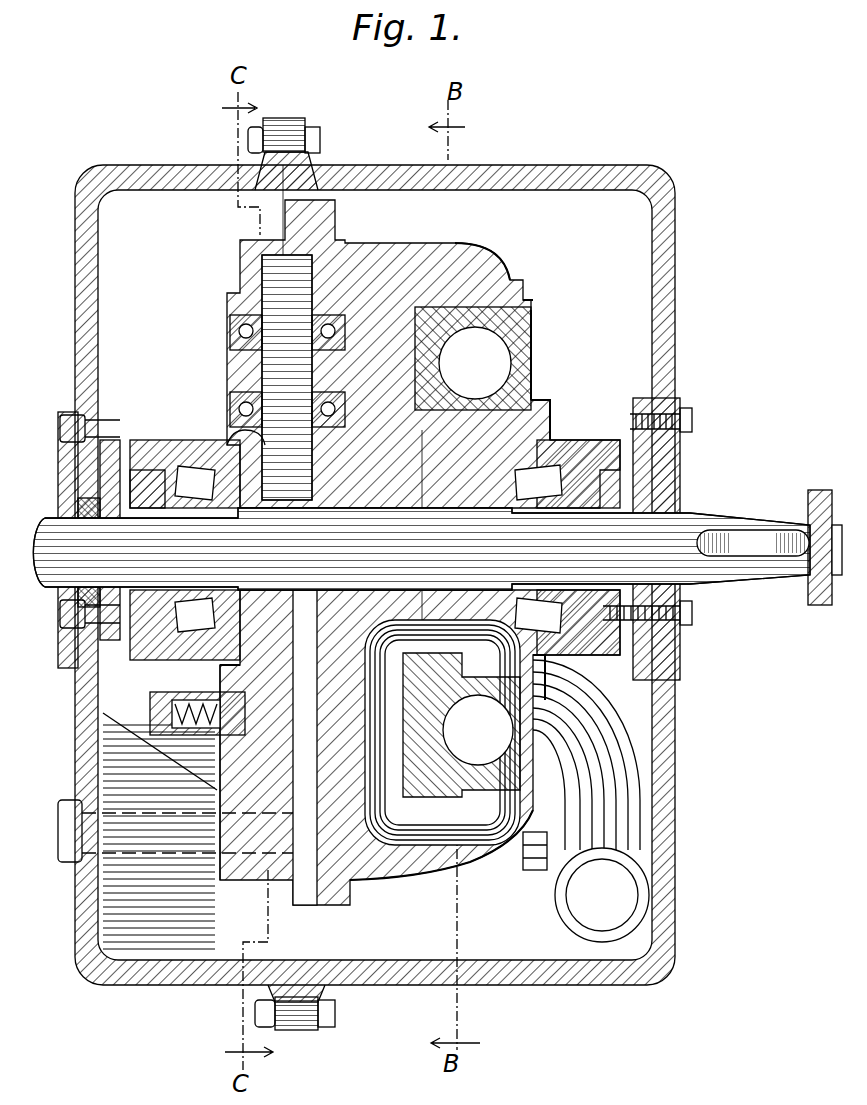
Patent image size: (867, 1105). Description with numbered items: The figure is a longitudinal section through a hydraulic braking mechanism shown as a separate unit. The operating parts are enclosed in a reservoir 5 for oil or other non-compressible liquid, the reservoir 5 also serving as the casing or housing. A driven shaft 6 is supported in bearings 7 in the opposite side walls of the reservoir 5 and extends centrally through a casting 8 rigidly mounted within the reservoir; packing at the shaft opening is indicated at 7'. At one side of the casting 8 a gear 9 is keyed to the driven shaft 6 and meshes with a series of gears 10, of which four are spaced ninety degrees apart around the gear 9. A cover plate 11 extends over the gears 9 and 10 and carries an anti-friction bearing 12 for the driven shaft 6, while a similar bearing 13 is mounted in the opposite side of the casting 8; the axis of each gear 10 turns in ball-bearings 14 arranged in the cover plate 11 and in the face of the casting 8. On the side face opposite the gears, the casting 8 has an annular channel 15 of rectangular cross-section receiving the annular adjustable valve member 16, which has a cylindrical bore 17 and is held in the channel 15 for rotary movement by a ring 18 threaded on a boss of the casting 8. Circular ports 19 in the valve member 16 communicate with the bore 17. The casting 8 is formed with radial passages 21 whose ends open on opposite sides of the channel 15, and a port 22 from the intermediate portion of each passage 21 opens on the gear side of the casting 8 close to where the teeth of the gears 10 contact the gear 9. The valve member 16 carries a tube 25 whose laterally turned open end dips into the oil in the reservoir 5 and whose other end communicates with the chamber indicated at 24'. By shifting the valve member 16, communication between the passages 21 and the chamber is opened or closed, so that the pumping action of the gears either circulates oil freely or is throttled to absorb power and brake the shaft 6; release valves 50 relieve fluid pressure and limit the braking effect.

The reservoir 5 is at (650, 740).
The driven shaft 6 is at (678, 530).
The bearings 7 is at (664, 539).
The packing cover 7' is at (75, 540).
The casting 8 is at (460, 248).
The gear 9 is at (268, 432).
The gears 10 is at (268, 272).
The cover plate 11 is at (292, 735).
The anti-friction bearing 12 is at (218, 465).
The bearing 13 is at (530, 478).
The ball-bearings 14 is at (330, 320).
The annular channel 15 is at (515, 282).
The annular adjustable valve member 16 is at (535, 305).
The cylindrical bore 17 is at (505, 348).
The ring 18 is at (540, 408).
The ports 19 is at (532, 312).
The radial passages 21 is at (445, 845).
The port 22 is at (335, 732).
The port 24' is at (442, 732).
The tube 25 is at (605, 822).
The release valves 50 is at (190, 712).